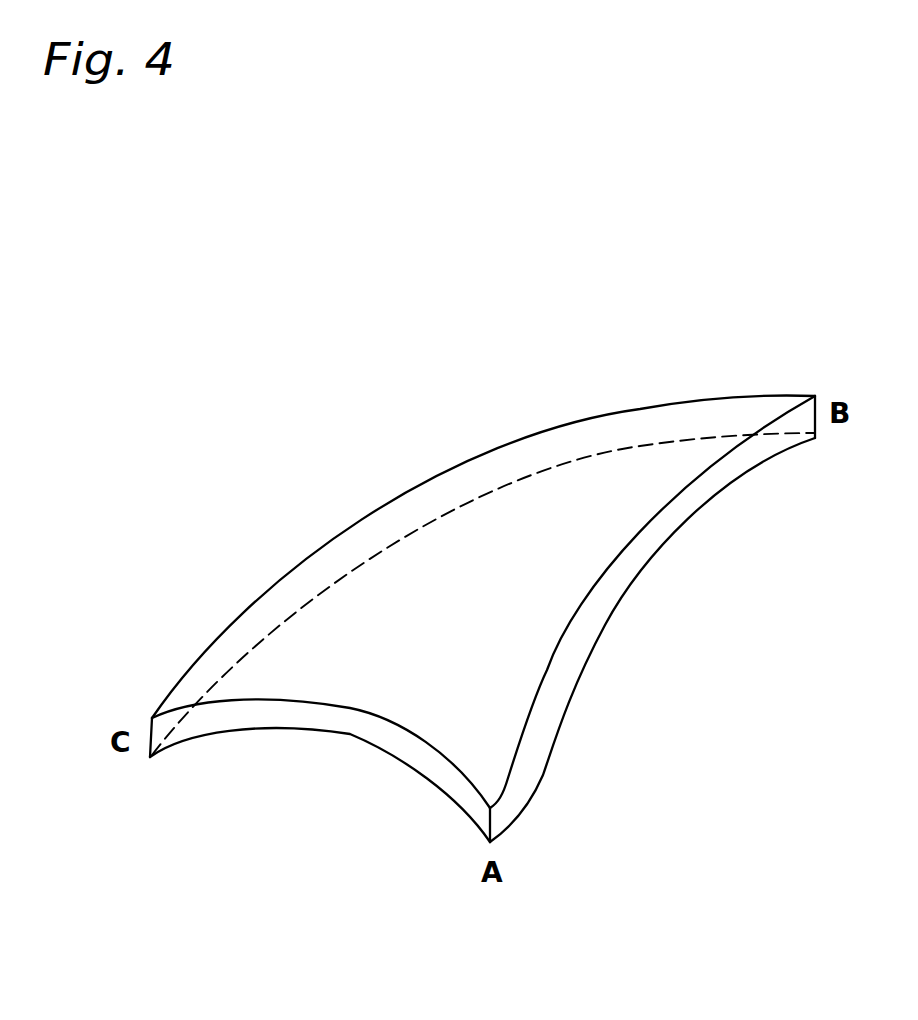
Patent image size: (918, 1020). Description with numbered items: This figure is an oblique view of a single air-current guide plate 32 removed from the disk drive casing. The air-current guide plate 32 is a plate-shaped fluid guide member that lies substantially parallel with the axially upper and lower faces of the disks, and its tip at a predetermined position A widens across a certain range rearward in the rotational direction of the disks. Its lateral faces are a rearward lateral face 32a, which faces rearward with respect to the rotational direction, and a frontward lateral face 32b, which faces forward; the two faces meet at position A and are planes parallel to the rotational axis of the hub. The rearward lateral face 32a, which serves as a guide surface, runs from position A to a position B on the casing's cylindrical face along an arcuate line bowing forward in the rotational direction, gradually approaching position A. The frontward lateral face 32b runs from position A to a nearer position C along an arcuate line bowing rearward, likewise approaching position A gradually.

The air-current guide plate 32 is at (482, 605).
The rearward lateral face 32a is at (587, 618).
The frontward lateral face 32b is at (275, 710).